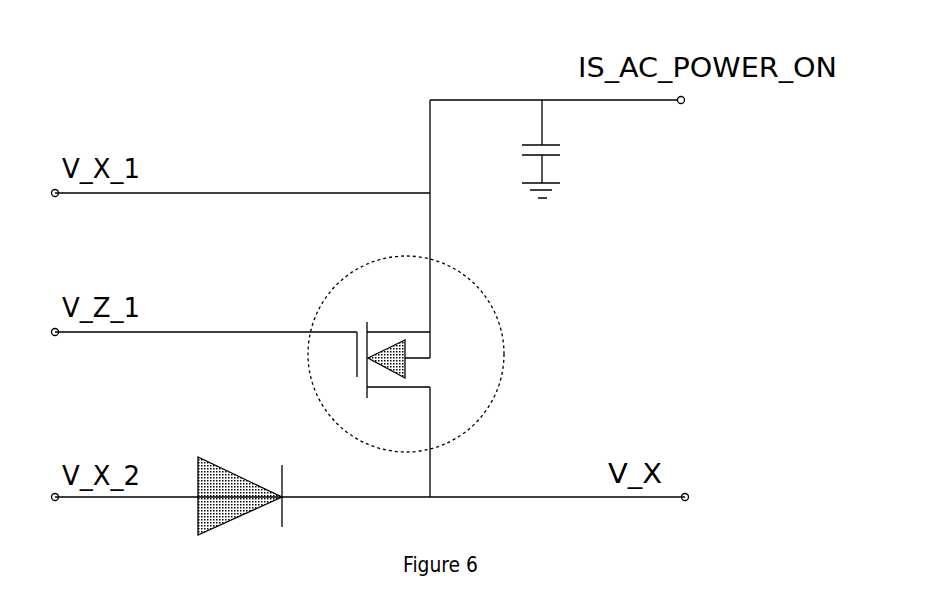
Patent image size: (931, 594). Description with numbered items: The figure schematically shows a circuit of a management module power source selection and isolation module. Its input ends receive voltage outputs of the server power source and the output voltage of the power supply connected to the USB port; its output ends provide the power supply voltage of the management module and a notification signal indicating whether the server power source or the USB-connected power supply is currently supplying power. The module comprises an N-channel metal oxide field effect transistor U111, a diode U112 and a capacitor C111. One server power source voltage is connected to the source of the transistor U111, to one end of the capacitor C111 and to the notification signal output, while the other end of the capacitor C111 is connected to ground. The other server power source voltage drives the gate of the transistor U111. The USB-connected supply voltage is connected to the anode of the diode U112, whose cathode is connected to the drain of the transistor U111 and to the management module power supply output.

The capacitor C111 is at (506, 149).
The N-channel metal oxide field effect transistor U111 is at (406, 354).
The diode U112 is at (240, 484).